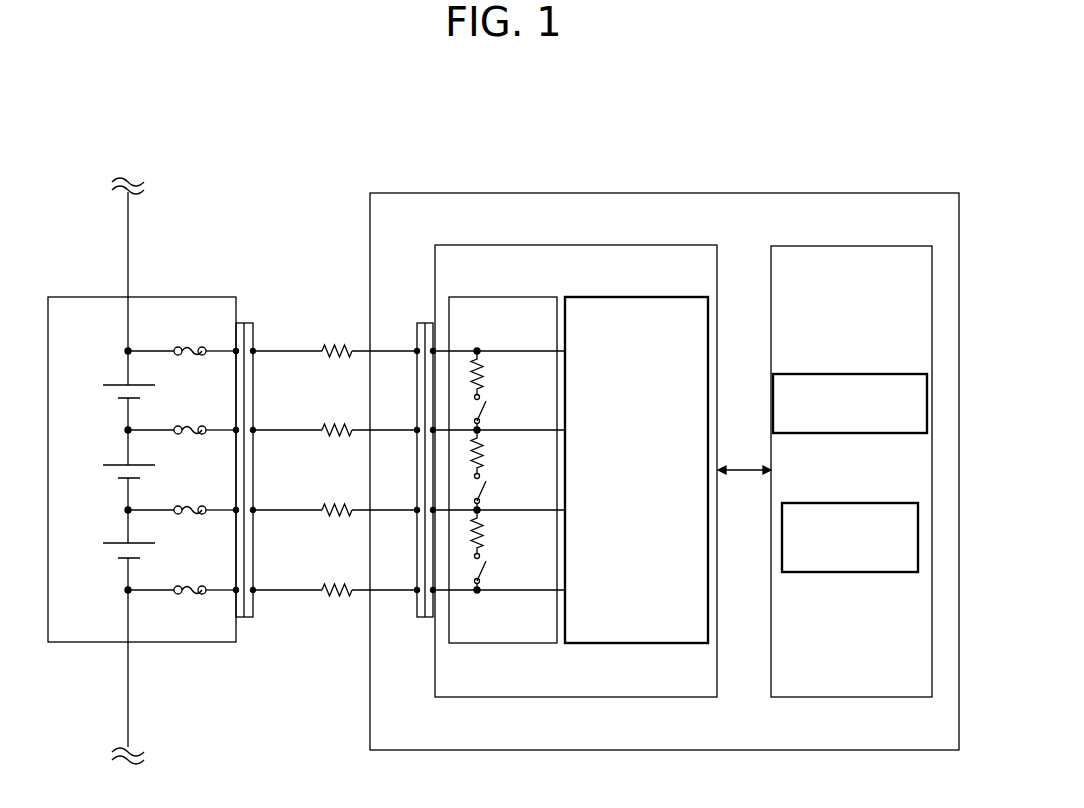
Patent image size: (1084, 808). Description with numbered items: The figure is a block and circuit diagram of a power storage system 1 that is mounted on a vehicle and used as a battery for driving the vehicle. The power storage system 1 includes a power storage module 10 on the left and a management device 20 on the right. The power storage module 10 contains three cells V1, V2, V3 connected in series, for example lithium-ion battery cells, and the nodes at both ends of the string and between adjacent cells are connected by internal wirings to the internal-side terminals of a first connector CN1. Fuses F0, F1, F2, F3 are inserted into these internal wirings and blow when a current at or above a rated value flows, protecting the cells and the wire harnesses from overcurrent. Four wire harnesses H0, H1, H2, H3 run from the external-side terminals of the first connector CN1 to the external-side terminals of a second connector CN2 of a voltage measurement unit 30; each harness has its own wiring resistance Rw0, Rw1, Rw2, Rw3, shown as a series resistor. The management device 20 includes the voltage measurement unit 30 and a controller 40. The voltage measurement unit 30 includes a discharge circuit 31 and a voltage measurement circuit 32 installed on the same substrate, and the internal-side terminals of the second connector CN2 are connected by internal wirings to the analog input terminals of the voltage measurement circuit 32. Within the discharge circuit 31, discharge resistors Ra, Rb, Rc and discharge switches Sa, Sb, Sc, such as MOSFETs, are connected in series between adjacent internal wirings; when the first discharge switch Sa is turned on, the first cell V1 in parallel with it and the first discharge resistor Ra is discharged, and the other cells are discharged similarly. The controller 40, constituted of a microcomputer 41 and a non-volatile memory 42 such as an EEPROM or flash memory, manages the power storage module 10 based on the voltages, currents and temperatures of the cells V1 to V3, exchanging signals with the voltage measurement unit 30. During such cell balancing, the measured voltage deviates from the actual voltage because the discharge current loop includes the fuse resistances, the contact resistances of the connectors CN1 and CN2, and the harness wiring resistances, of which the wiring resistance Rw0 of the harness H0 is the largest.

The power storage system 1 is at (497, 800).
The power storage module 10 is at (203, 297).
The management device 20 is at (920, 193).
The voltage measurement unit 30 is at (685, 245).
The discharge circuit 31 is at (528, 297).
The voltage measurement circuit 32 is at (653, 297).
The controller 40 is at (888, 246).
The microcomputer 41 is at (872, 374).
The non-volatile memory 42 is at (872, 503).
The first connector CN1 is at (248, 323).
The second connector CN2 is at (421, 323).
The 0th wire harness H0 is at (277, 351).
The first wire harness H1 is at (277, 430).
The second wire harness H2 is at (277, 510).
The wire harness H3 is at (277, 590).
The wiring resistance of 0th wire harness Rw0 is at (336, 341).
The wiring resistance of first wire harness Rw1 is at (336, 421).
The wiring resistance of second wire harness Rw2 is at (336, 501).
The wiring resistance of wire harness Rw3 is at (336, 581).
The 0th fuse F0 is at (180, 341).
The first fuse F1 is at (180, 420).
The second fuse F2 is at (180, 500).
The fuse F3 is at (180, 580).
The first cell V1 is at (116, 390).
The second cell V2 is at (116, 470).
The cell V3 is at (116, 550).
The first discharge resistor Ra is at (490, 371).
The second discharge resistor Rb is at (490, 450).
The discharge resistor Rc is at (490, 530).
The first discharge switch Sa is at (492, 413).
The second discharge switch Sb is at (492, 492).
The discharge switch Sc is at (491, 572).